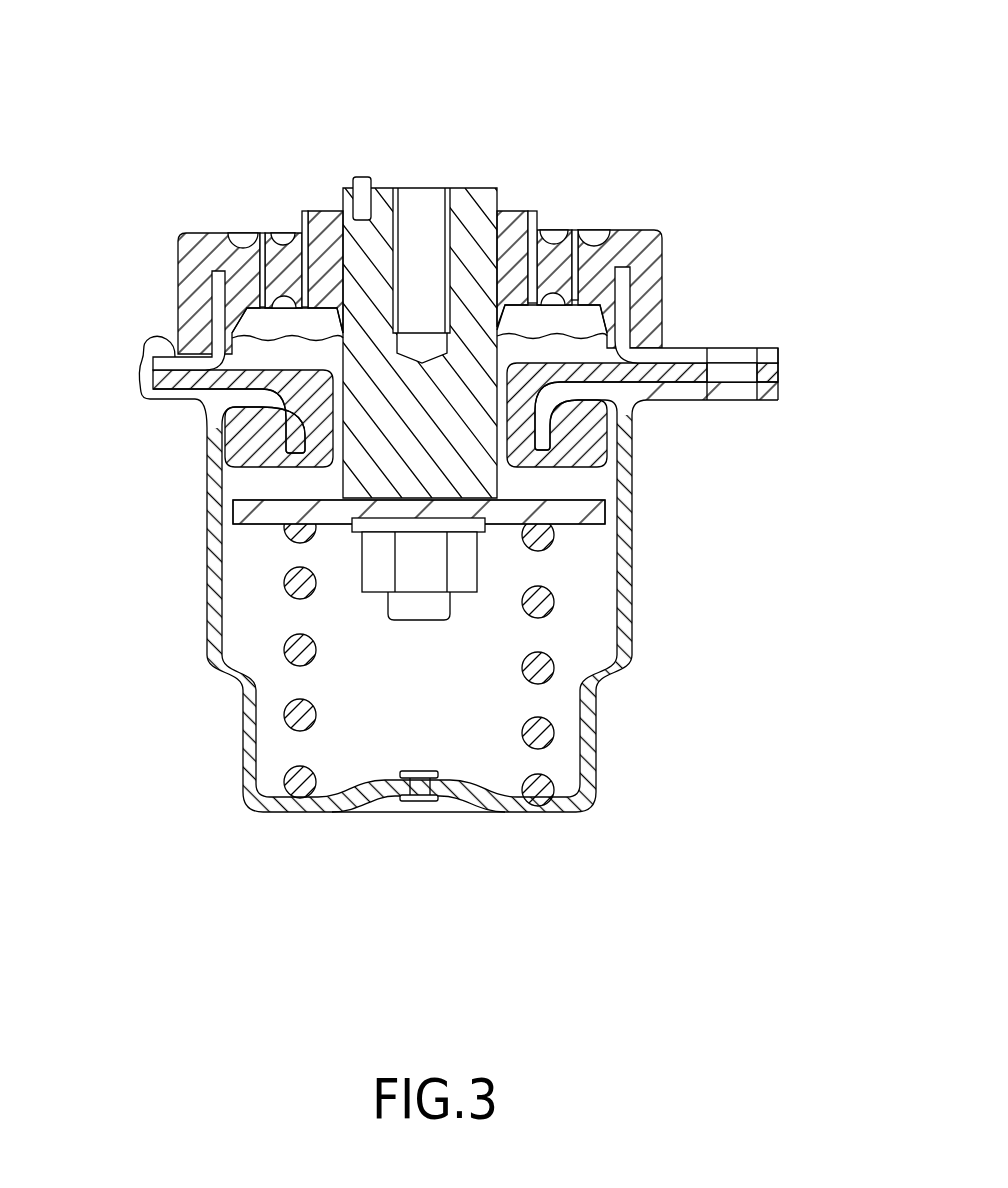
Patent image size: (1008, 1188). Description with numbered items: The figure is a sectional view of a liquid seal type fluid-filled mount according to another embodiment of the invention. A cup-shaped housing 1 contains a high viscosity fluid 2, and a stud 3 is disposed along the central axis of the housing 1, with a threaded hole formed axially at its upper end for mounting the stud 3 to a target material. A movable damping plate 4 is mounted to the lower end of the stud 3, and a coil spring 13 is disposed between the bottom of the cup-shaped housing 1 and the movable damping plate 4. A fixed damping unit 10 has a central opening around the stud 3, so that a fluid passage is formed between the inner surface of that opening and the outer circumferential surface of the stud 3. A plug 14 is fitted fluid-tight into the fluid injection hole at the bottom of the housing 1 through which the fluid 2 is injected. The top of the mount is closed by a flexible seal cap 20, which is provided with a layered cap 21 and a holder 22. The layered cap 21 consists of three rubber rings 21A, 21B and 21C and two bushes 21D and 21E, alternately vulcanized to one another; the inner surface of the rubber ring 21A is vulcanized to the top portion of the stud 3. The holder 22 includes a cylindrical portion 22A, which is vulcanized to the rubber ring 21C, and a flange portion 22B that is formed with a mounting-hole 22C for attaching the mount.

The cup-shaped housing 1 is at (623, 578).
The high viscosity fluid 2 is at (590, 647).
The stud 3 is at (474, 208).
The movable damping plate 4 is at (248, 520).
The fixed damping unit 10 is at (595, 425).
The coil spring 13 is at (295, 713).
The plug 14 is at (418, 801).
The flexible seal cap 20 is at (285, 200).
The layered cap 21 is at (613, 185).
The rubber ring 21A is at (514, 208).
The rubber ring 21B is at (558, 225).
The rubber ring 21C is at (650, 228).
The bush 21D is at (306, 210).
The bush 21E is at (262, 233).
The holder 22 is at (662, 277).
The cylindrical portion 22A is at (218, 302).
The flange portion 22B is at (675, 346).
The mounting-hole 22C is at (738, 358).